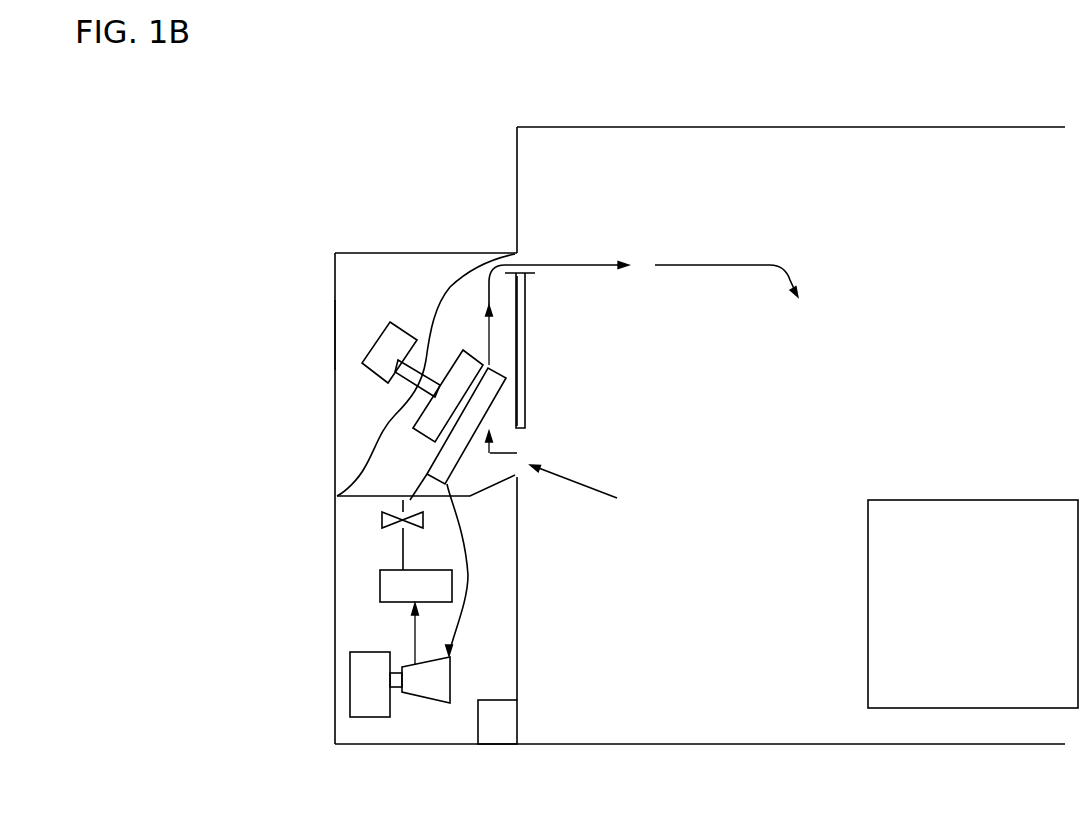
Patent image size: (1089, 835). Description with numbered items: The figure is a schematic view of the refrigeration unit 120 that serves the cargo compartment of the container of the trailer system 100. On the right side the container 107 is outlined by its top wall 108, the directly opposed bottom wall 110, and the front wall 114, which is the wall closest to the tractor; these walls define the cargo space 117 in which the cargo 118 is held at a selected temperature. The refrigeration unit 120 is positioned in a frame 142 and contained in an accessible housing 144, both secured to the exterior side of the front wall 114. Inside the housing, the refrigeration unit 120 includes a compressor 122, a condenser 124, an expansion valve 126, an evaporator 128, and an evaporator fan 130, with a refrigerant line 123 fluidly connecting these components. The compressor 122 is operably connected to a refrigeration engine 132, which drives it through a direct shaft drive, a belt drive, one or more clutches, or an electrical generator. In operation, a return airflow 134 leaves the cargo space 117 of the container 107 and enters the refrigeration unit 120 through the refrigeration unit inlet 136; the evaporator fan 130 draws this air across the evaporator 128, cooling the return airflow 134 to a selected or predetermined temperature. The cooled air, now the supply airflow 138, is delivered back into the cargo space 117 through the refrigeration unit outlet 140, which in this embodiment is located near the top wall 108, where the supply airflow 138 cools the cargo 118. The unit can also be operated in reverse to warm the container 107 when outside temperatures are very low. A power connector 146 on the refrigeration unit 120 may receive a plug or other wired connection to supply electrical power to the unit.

The trailer system 100 is at (457, 110).
The container 107 is at (1007, 165).
The top wall 108 is at (755, 127).
The bottom wall 110 is at (704, 744).
The front wall 114 is at (517, 202).
The cargo space 117 is at (957, 319).
The cargo 118 is at (993, 623).
The refrigeration unit 120 is at (327, 233).
The compressor 122 is at (430, 700).
The refrigerant line 123 is at (402, 560).
The condenser 124 is at (380, 587).
The expansion valve 126 is at (383, 521).
The evaporator 128 is at (495, 393).
The evaporator fan 130 is at (430, 420).
The refrigeration engine 132 is at (358, 690).
The return airflow 134 is at (585, 488).
The refrigeration unit inlet 136 is at (527, 452).
The supply airflow 138 is at (710, 263).
The refrigeration unit outlet 140 is at (517, 258).
The frame 142 is at (352, 478).
The housing 144 is at (335, 334).
The power connector 146 is at (495, 733).